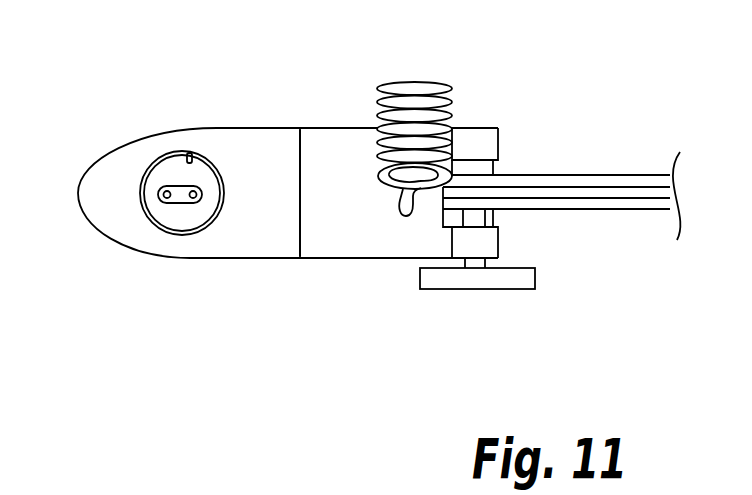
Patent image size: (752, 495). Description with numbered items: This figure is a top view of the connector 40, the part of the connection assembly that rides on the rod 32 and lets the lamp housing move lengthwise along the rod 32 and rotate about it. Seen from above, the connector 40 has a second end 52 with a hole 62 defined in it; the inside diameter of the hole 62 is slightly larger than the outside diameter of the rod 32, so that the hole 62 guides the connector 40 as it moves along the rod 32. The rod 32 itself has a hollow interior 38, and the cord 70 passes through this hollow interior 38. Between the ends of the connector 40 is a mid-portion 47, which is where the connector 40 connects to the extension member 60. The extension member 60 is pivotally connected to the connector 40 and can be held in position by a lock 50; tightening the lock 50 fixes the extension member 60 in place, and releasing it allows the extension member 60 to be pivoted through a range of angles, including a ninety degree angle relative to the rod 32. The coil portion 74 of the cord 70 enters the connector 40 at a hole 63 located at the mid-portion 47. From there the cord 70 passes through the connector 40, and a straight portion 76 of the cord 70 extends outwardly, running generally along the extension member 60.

The rod 32 is at (191, 152).
The hollow interior 38 is at (178, 218).
The connector 40 is at (307, 128).
The mid-portion 47 is at (338, 237).
The lock 50 is at (462, 278).
The second end 52 is at (127, 227).
The extension member 60 is at (578, 182).
The hole 62 is at (210, 223).
The hole 63 is at (403, 218).
The cord 70 is at (179, 186).
The coil portion 74 is at (448, 87).
The straight portion 76 is at (627, 192).